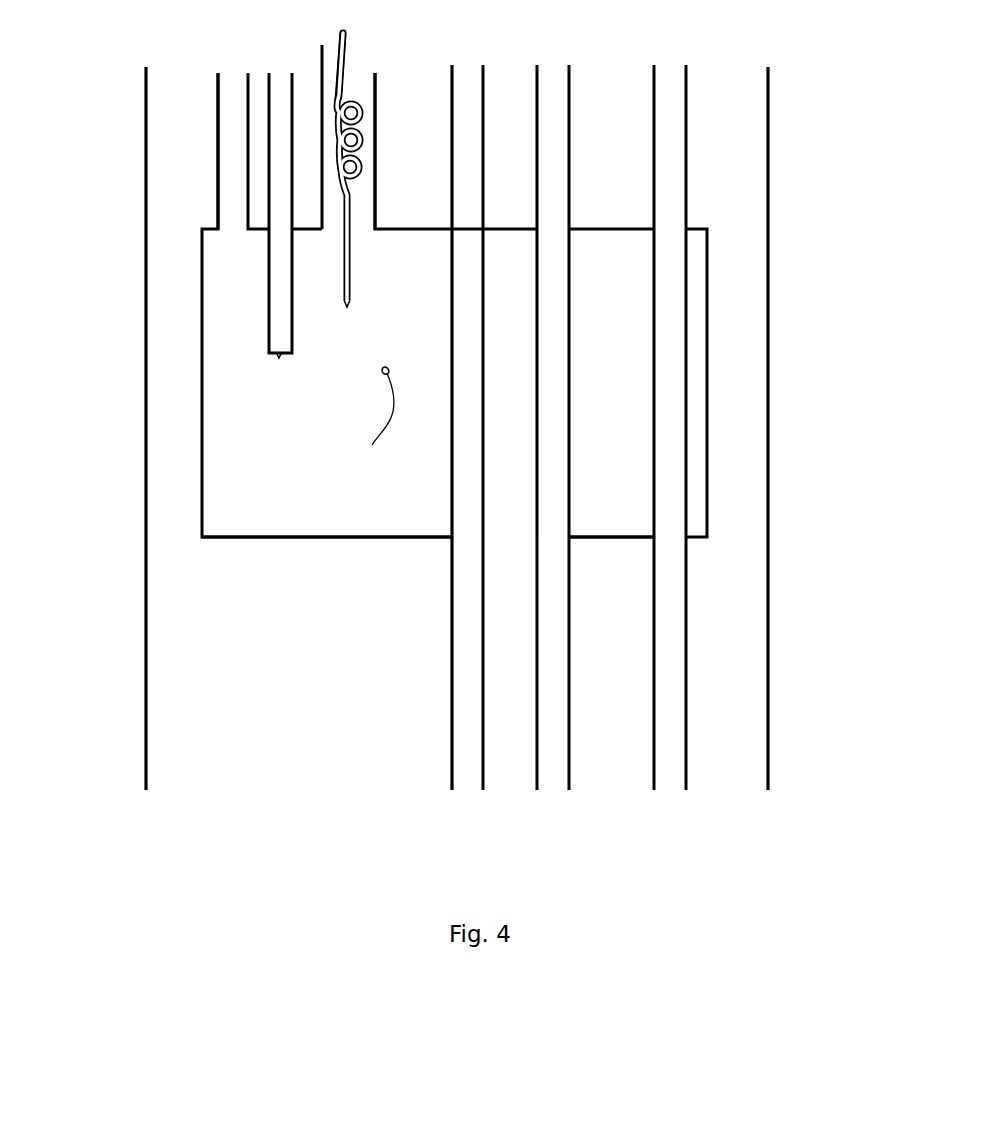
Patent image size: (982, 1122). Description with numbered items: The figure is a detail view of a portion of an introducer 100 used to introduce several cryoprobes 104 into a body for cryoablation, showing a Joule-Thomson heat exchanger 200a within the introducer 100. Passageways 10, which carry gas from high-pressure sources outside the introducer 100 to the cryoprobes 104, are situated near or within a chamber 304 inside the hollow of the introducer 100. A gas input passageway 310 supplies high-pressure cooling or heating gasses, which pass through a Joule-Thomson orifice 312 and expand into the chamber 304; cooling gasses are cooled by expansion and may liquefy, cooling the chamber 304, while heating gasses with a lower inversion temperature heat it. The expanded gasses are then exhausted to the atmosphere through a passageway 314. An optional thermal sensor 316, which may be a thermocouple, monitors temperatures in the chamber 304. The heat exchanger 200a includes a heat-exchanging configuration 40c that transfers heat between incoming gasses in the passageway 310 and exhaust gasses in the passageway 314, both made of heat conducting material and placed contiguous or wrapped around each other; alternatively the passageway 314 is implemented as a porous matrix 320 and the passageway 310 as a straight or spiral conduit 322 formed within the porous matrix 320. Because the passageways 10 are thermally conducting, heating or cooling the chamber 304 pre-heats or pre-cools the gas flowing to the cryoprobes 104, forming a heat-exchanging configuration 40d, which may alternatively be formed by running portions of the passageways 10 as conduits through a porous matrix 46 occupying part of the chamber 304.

The passageways 10 is at (483, 120).
The porous matrix 46 is at (612, 338).
The heat-exchanging configuration 40c is at (360, 185).
The heat-exchanging configuration 40d is at (592, 482).
The introducer 100 is at (146, 690).
The cryoprobes 104 is at (483, 712).
The heat exchanger 200a is at (202, 388).
The chamber 304 is at (269, 508).
The gas input passageway 310 is at (280, 88).
The Joule-Thomson orifice 312 is at (345, 312).
The passageway 314 is at (217, 133).
The thermal sensor 316 is at (375, 420).
The porous matrix 320 is at (322, 53).
The conduit 322 is at (347, 55).